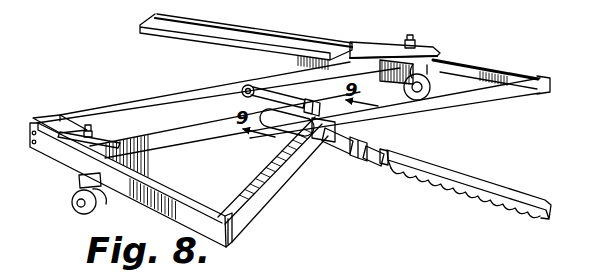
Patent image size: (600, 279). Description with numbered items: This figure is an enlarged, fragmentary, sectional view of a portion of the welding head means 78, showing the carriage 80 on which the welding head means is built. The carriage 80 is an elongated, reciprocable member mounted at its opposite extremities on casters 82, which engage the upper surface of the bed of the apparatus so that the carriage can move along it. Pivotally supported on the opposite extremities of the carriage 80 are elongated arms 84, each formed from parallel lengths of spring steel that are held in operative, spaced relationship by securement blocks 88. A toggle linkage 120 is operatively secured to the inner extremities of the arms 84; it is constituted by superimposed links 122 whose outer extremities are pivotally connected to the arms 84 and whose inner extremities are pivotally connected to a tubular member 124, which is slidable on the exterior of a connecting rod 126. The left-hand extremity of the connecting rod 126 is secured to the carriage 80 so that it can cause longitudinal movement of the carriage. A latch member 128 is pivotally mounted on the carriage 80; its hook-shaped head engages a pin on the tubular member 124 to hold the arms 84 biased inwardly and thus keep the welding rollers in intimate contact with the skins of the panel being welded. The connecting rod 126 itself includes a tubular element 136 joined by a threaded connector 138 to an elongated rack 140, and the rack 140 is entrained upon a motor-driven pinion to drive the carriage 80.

The welding head means 78 is at (324, 32).
The carriage 80 is at (390, 46).
The casters 82 is at (438, 72).
The arms 84 is at (241, 28).
The securement blocks 88 is at (45, 117).
The toggle linkage 120 is at (252, 190).
The links 122 is at (278, 157).
The tubular member 124 is at (313, 140).
The connecting rod 126 is at (343, 152).
The latch member 128 is at (272, 86).
The tubular element 136 is at (374, 143).
The threaded connector 138 is at (389, 150).
The rack 140 is at (481, 190).